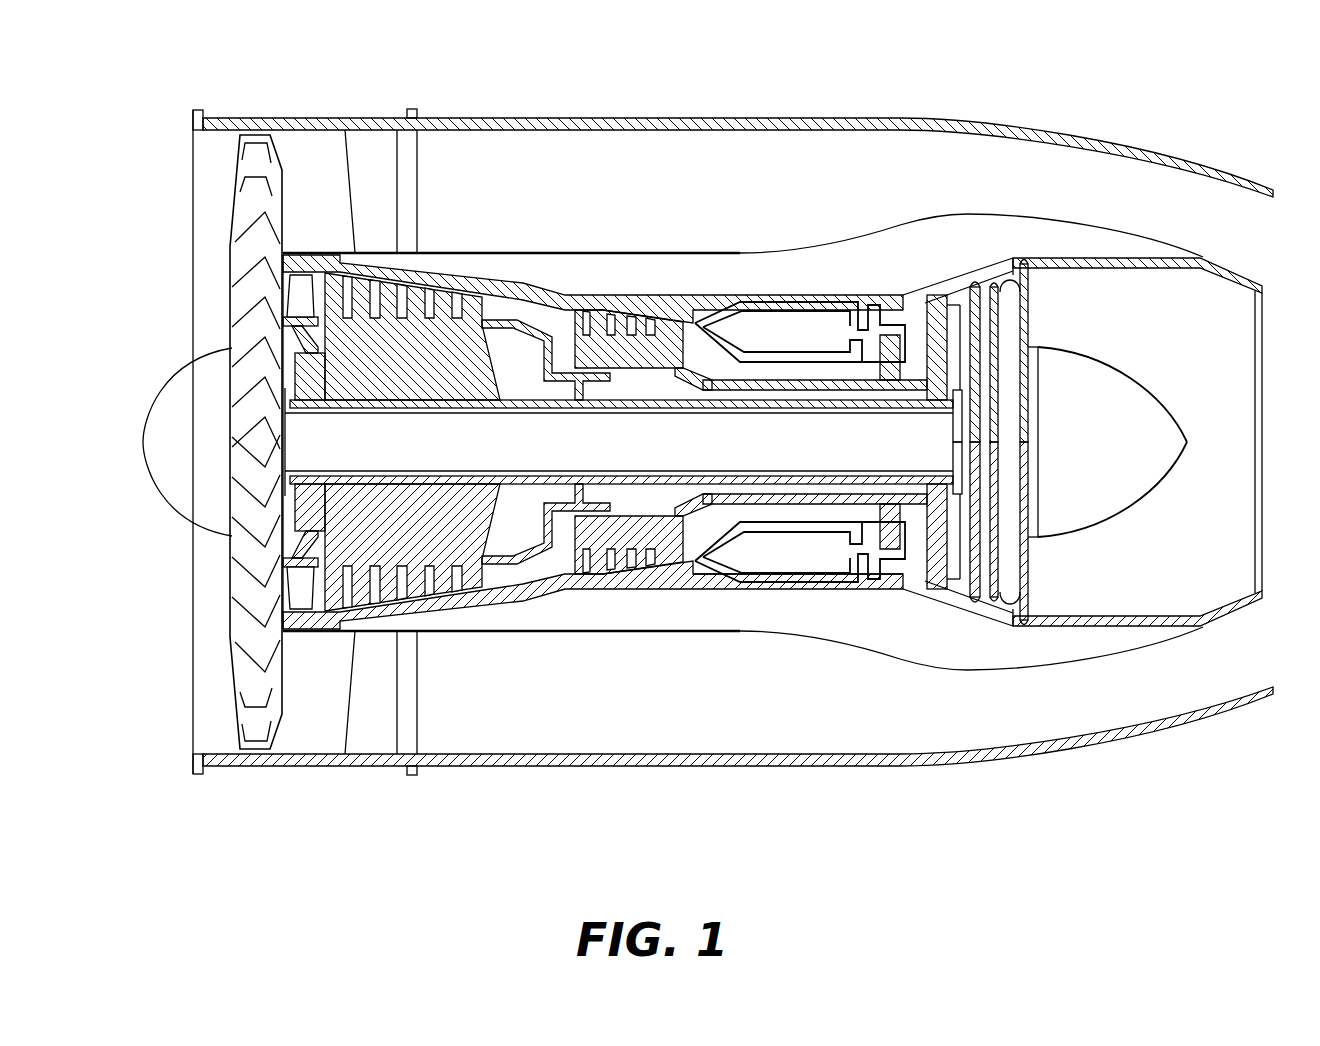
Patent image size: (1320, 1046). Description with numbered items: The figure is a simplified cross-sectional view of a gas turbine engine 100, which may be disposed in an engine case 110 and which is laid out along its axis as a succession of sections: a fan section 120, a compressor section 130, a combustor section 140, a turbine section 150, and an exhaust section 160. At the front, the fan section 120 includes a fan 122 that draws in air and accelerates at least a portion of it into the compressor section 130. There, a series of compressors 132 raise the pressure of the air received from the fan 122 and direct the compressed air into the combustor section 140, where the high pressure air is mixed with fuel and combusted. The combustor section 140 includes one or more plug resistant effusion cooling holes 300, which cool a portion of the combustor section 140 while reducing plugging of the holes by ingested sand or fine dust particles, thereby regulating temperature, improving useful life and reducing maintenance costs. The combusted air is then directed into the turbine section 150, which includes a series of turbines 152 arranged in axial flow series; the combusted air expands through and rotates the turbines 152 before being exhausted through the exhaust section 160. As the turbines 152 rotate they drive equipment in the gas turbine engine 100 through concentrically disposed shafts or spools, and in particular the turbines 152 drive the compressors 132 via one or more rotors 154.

The gas turbine engine 100 is at (1022, 107).
The engine case 110 is at (437, 118).
The fan section 120 is at (295, 815).
The fan 122 is at (240, 260).
The compressor section 130 is at (672, 815).
The compressors 132 is at (425, 400).
The combustor section 140 is at (888, 815).
The turbine section 150 is at (1065, 815).
The turbines 152 is at (1037, 633).
The rotors 154 is at (503, 413).
The exhaust section 160 is at (1230, 815).
The effusion cooling holes 300 is at (742, 583).